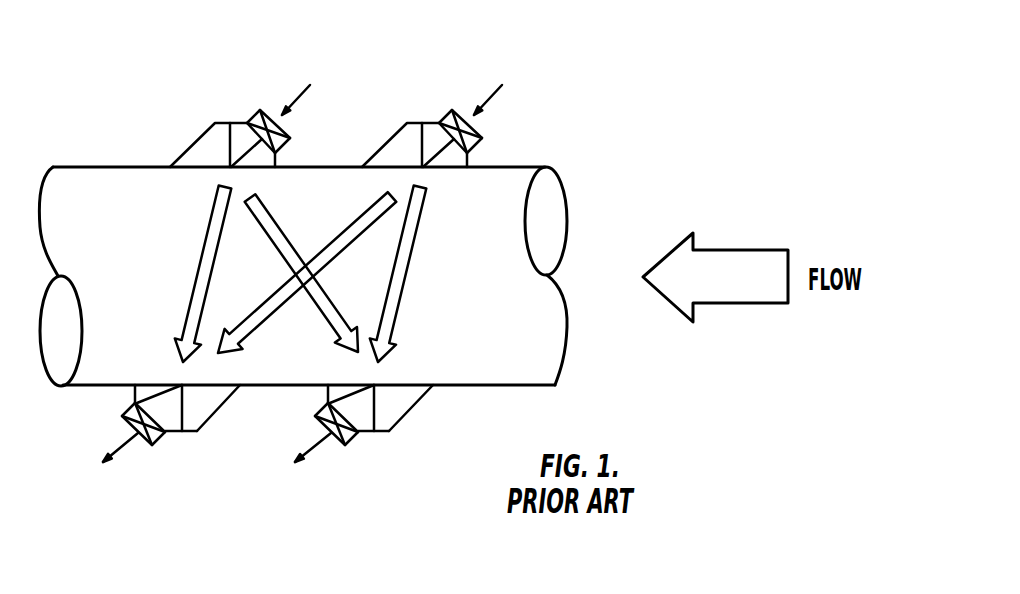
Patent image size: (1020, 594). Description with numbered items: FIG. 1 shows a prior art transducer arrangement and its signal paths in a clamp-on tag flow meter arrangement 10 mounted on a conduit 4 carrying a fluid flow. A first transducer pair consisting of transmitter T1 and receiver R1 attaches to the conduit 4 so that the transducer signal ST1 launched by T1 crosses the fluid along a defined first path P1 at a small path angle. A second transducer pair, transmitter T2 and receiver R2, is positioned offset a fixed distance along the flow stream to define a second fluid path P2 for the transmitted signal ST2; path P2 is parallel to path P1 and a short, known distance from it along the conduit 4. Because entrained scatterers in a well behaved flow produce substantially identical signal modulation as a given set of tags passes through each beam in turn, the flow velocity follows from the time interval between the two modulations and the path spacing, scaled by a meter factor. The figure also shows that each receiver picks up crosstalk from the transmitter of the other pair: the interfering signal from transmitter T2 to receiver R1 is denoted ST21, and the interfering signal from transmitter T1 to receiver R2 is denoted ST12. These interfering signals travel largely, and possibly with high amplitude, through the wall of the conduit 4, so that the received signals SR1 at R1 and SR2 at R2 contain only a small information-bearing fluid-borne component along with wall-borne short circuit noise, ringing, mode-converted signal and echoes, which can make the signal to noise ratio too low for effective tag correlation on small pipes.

The clamp-on tag flow meter arrangement 10 is at (612, 140).
The conduit 4 is at (513, 352).
The transmitting transducer of the first transducer pair T1 is at (421, 126).
The transmitting transducer of the second transducer pair T2 is at (229, 126).
The receiving transducer of the first transducer pair R1 is at (366, 423).
The receiving transducer of the second transducer pair R2 is at (171, 423).
The first fluid path P1 is at (412, 243).
The second fluid path P2 is at (207, 232).
The transducer signal of the first pair ST1 is at (431, 295).
The transmitted signal of the second pair ST2 is at (170, 272).
The interfering signal from transmitter T2 to receiver R1 ST21 is at (301, 262).
The interfering signal from transmitter T1 to receiver R2 ST12 is at (307, 288).
The signal received at R1 SR1 is at (293, 486).
The signal received at R2 SR2 is at (89, 487).